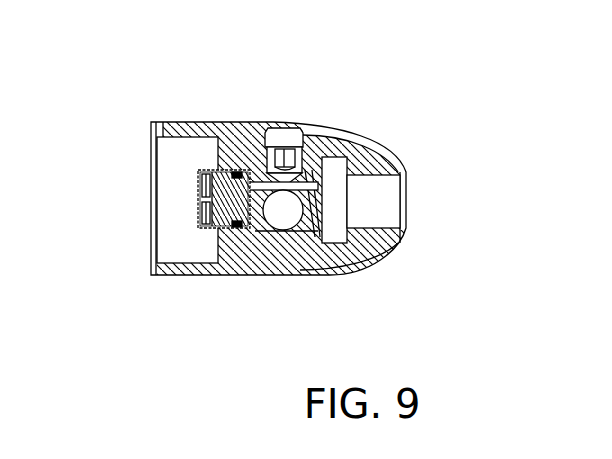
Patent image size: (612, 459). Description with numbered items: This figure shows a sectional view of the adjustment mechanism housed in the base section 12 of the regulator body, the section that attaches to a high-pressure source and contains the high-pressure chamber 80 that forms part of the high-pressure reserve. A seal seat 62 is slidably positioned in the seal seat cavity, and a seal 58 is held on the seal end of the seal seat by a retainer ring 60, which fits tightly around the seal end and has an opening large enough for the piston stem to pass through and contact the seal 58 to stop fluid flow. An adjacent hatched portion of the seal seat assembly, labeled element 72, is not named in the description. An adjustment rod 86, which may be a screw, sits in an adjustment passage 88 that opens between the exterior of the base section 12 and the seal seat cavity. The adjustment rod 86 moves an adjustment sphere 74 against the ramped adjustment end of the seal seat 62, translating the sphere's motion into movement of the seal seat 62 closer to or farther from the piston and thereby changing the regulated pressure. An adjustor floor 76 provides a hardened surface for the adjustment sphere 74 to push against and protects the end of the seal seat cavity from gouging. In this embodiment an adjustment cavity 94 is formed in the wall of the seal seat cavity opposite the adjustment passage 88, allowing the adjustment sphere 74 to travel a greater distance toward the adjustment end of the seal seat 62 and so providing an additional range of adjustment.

The base section 12 is at (158, 76).
The seal 58 is at (200, 188).
The retainer ring 60 is at (203, 228).
The seal seat 62 is at (229, 229).
The plunger 72 is at (250, 222).
The adjustment sphere 74 is at (298, 226).
The adjustor floor 76 is at (318, 203).
The high-pressure chamber 80 is at (333, 208).
The adjustment rod 86 is at (282, 152).
The adjustment passage 88 is at (282, 113).
The adjustment cavity 94 is at (285, 212).